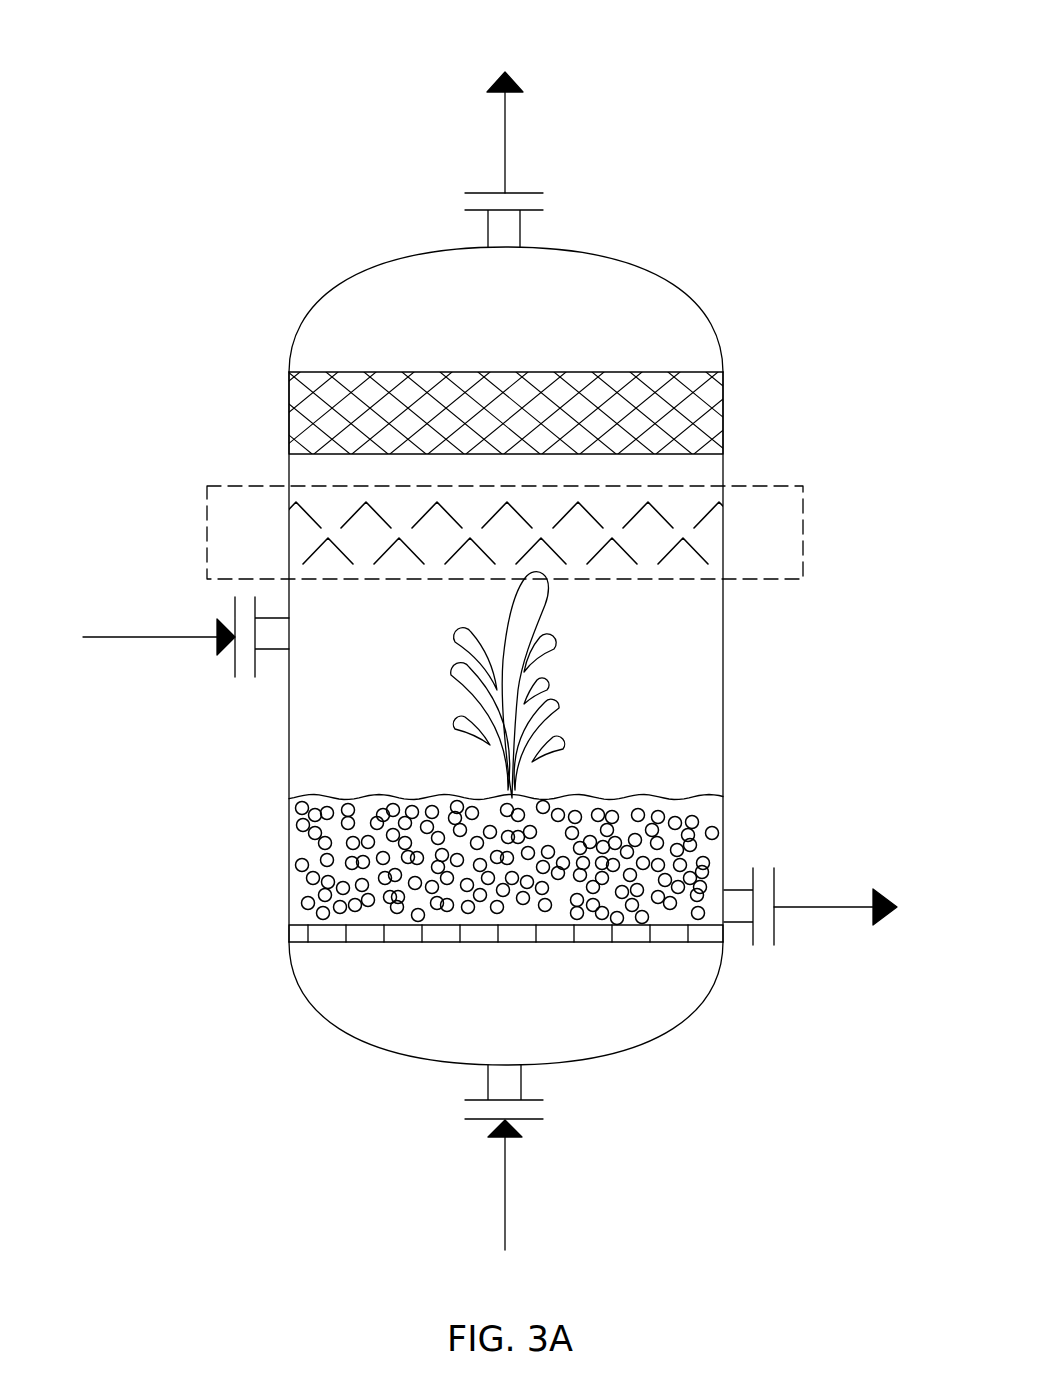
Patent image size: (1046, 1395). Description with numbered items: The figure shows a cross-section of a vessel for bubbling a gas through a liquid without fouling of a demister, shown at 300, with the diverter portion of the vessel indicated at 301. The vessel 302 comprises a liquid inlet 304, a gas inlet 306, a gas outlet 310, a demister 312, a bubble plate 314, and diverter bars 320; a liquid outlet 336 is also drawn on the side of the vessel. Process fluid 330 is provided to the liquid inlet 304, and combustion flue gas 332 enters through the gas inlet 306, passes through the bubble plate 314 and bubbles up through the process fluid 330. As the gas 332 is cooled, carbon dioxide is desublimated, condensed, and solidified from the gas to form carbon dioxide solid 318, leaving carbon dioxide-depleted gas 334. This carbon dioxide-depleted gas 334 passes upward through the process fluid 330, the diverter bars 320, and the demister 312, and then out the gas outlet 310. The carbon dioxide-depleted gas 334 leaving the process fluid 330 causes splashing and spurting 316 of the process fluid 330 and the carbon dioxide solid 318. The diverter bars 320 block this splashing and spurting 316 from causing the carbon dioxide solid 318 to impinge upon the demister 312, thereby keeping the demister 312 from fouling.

The cross-section of a vessel 300 is at (165, 65).
The isometric cutaway view of the diverter portion 301 is at (207, 530).
The vessel 302 is at (336, 294).
The liquid inlet 304 is at (273, 652).
The gas inlet 306 is at (521, 1081).
The gas outlet 310 is at (521, 224).
The demister 312 is at (289, 410).
The bubble plate 314 is at (290, 933).
The splashing and spurting 316 is at (528, 624).
The carbon dioxide solid 318 is at (725, 831).
The diverter bars 320 is at (693, 553).
The process fluid 330 is at (293, 841).
The combustion flue gas 332 is at (506, 1207).
The carbon dioxide-depleted gas 334 is at (506, 114).
The liquid outlet 336 is at (735, 923).